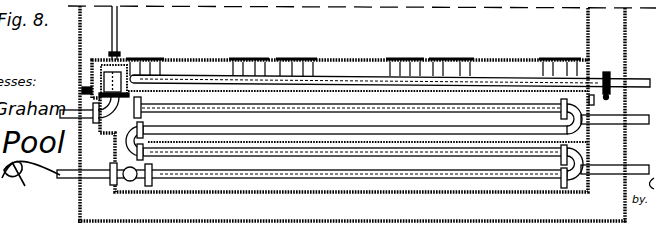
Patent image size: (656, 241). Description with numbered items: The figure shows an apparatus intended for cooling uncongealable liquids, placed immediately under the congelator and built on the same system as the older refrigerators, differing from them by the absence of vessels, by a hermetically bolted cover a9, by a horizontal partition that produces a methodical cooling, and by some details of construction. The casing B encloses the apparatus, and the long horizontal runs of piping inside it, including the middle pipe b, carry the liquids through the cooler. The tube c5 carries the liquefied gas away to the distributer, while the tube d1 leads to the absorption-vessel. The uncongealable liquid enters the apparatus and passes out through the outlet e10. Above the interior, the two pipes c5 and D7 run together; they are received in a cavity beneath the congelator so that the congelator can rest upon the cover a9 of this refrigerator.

The casing B is at (362, 114).
The pipe D7 is at (393, 83).
The tube for carrying off the liquefied gas c5 is at (94, 94).
The cover a9 is at (391, 113).
The middle return pipe b is at (346, 141).
The tube which leads to the absorption-vessel d1 is at (312, 171).
The outlet pipe e10 is at (605, 166).